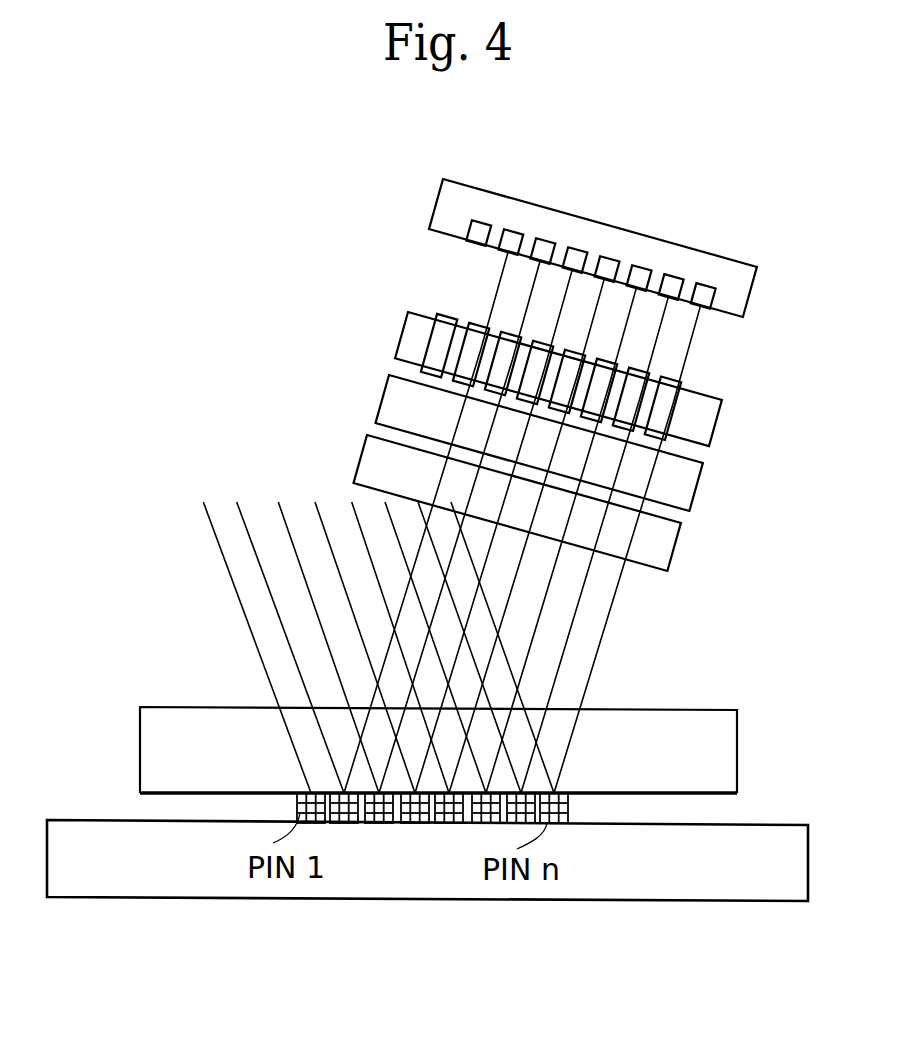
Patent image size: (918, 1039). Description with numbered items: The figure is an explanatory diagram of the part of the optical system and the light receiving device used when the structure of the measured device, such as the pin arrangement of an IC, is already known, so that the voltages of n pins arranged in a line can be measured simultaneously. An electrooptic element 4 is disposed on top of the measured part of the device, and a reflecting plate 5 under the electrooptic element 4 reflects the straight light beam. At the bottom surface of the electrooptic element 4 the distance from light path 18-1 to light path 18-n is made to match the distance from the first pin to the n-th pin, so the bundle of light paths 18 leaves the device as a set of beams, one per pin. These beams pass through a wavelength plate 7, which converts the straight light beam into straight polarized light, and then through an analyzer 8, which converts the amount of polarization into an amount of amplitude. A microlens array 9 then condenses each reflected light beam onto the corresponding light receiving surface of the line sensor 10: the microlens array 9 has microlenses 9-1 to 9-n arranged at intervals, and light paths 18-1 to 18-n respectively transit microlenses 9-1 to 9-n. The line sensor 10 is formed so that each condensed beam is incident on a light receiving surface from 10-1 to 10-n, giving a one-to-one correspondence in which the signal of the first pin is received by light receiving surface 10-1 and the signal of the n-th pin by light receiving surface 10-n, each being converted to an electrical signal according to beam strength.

The electrooptic element 4 is at (715, 727).
The reflecting plate 5 is at (693, 793).
The wavelength plate 7 is at (677, 545).
The analyzer 8 is at (693, 490).
The microlens array 9 is at (712, 432).
The microlens 9-1 is at (437, 347).
The microlens 9-n is at (693, 388).
The line sensor 10 is at (753, 297).
The light receiving surface 10-1 is at (478, 230).
The light receiving surface 10-n is at (705, 294).
The light paths 18 is at (198, 558).
The light path 18-1 is at (249, 628).
The light path 18-n is at (595, 657).